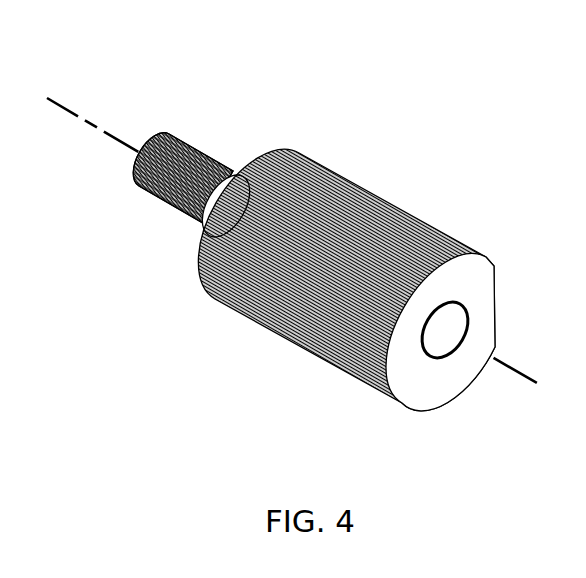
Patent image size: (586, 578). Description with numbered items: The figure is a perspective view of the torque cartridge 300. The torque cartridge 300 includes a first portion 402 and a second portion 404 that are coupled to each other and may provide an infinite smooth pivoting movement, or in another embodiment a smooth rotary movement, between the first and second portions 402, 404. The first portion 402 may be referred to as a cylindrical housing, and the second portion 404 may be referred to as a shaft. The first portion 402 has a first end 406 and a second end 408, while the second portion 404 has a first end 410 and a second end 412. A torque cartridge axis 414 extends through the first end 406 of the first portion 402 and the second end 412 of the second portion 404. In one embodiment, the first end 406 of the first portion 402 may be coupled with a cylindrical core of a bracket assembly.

The torque cartridge 300 is at (102, 61).
The first portion 402 is at (352, 230).
The second portion 404 is at (153, 161).
The first end 406 is at (470, 250).
The second end 408 is at (277, 148).
The first end 410 is at (211, 184).
The second end 412 is at (165, 133).
The torque cartridge axis 414 is at (63, 107).